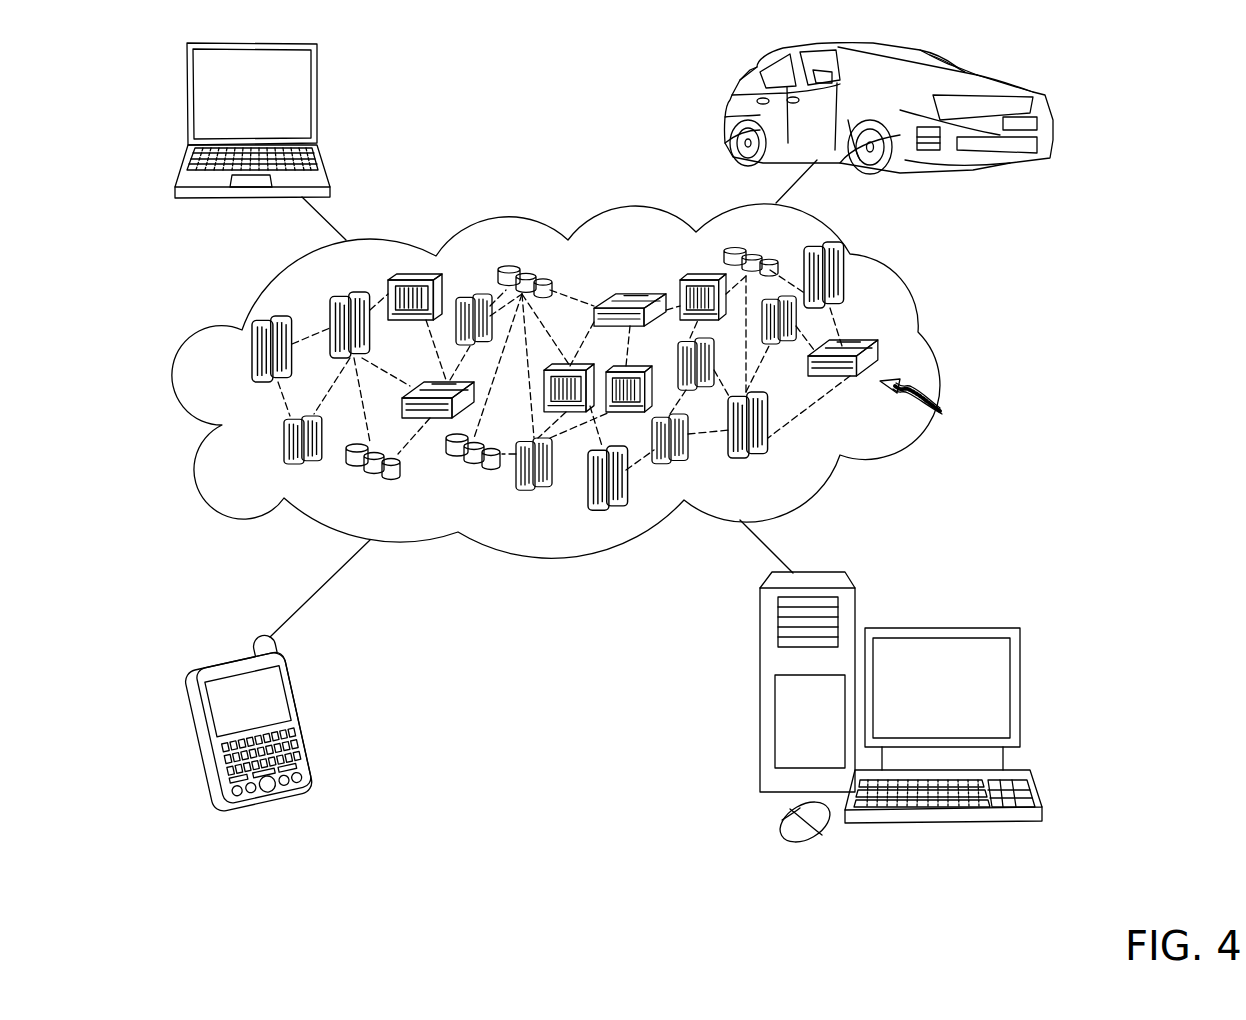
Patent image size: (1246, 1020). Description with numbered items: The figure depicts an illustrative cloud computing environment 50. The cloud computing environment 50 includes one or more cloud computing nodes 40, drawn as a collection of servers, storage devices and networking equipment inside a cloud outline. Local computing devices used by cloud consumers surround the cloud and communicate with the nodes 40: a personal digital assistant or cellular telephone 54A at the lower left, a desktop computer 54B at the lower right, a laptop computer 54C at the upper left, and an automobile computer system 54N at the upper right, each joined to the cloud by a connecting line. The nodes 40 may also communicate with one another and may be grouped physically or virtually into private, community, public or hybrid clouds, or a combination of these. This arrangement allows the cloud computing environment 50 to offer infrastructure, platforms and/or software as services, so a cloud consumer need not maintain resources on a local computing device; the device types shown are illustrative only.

The cloud computing nodes 40 is at (929, 403).
The cloud computing environment 50 is at (940, 355).
The personal digital assistant (PDA) or cellular telephone 54A is at (308, 720).
The desktop computer 54B is at (938, 627).
The laptop computer 54C is at (317, 102).
The automobile computer system 54N is at (728, 112).